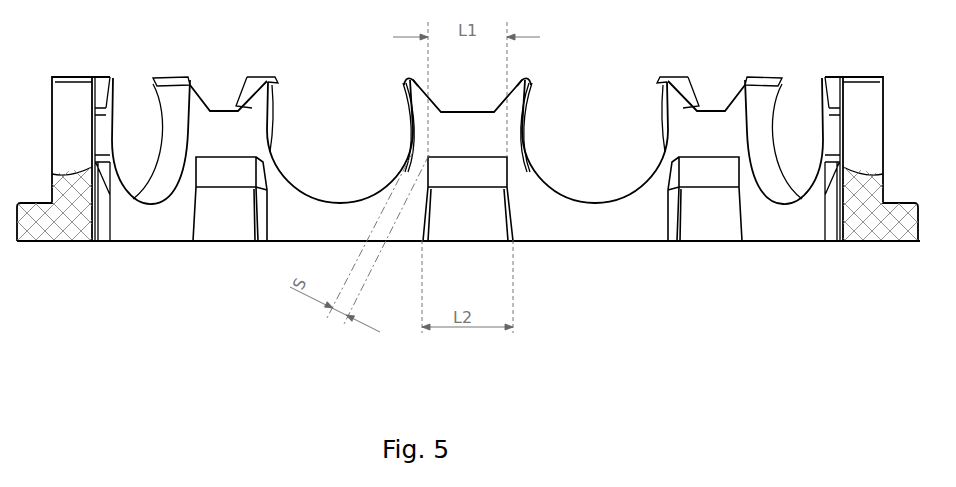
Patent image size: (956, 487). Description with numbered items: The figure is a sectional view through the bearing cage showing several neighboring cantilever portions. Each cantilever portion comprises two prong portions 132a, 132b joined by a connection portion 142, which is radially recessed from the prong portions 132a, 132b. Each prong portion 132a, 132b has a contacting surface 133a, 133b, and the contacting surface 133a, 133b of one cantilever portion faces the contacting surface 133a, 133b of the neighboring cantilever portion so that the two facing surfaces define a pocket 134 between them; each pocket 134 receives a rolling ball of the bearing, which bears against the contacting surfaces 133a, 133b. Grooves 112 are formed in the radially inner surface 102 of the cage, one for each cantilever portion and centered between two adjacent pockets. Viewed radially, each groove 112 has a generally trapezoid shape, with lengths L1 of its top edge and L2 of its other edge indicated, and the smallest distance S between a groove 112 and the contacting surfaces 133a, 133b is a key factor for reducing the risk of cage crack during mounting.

The radially inner surface 102 is at (543, 213).
The groove 112 is at (442, 213).
The prong portion 132a is at (410, 78).
The prong portion 132b is at (523, 78).
The contacting surface 133a is at (402, 120).
The contacting surface 133b is at (528, 103).
The pocket 134 is at (603, 113).
The connection portion 142 is at (444, 138).